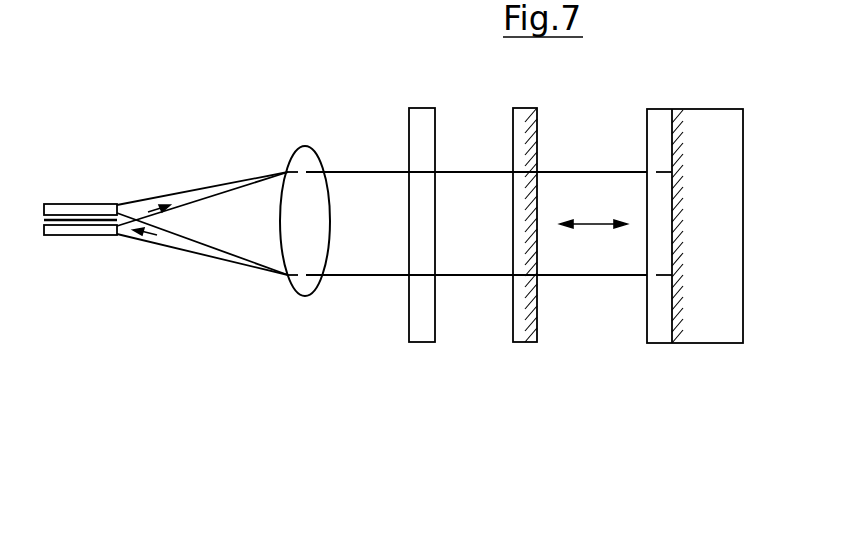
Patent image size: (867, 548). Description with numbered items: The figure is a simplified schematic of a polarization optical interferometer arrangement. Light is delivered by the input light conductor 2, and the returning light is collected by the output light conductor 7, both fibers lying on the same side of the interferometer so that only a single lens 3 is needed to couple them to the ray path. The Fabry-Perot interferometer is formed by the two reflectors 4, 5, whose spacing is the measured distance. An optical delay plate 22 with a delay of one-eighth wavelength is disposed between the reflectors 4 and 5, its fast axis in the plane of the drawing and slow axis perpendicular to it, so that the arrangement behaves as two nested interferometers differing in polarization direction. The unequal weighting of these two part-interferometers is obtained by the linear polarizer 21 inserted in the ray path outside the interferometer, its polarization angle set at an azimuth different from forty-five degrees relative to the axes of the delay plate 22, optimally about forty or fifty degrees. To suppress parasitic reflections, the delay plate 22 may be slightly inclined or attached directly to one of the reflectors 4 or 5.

The input light conductor 2 is at (93, 203).
The output light conductor 7 is at (95, 236).
The lens 3 is at (291, 148).
The polarizer 21 is at (436, 107).
The reflector 4 is at (517, 91).
The reflector 5 is at (705, 109).
The optical delay plate 22 is at (657, 343).